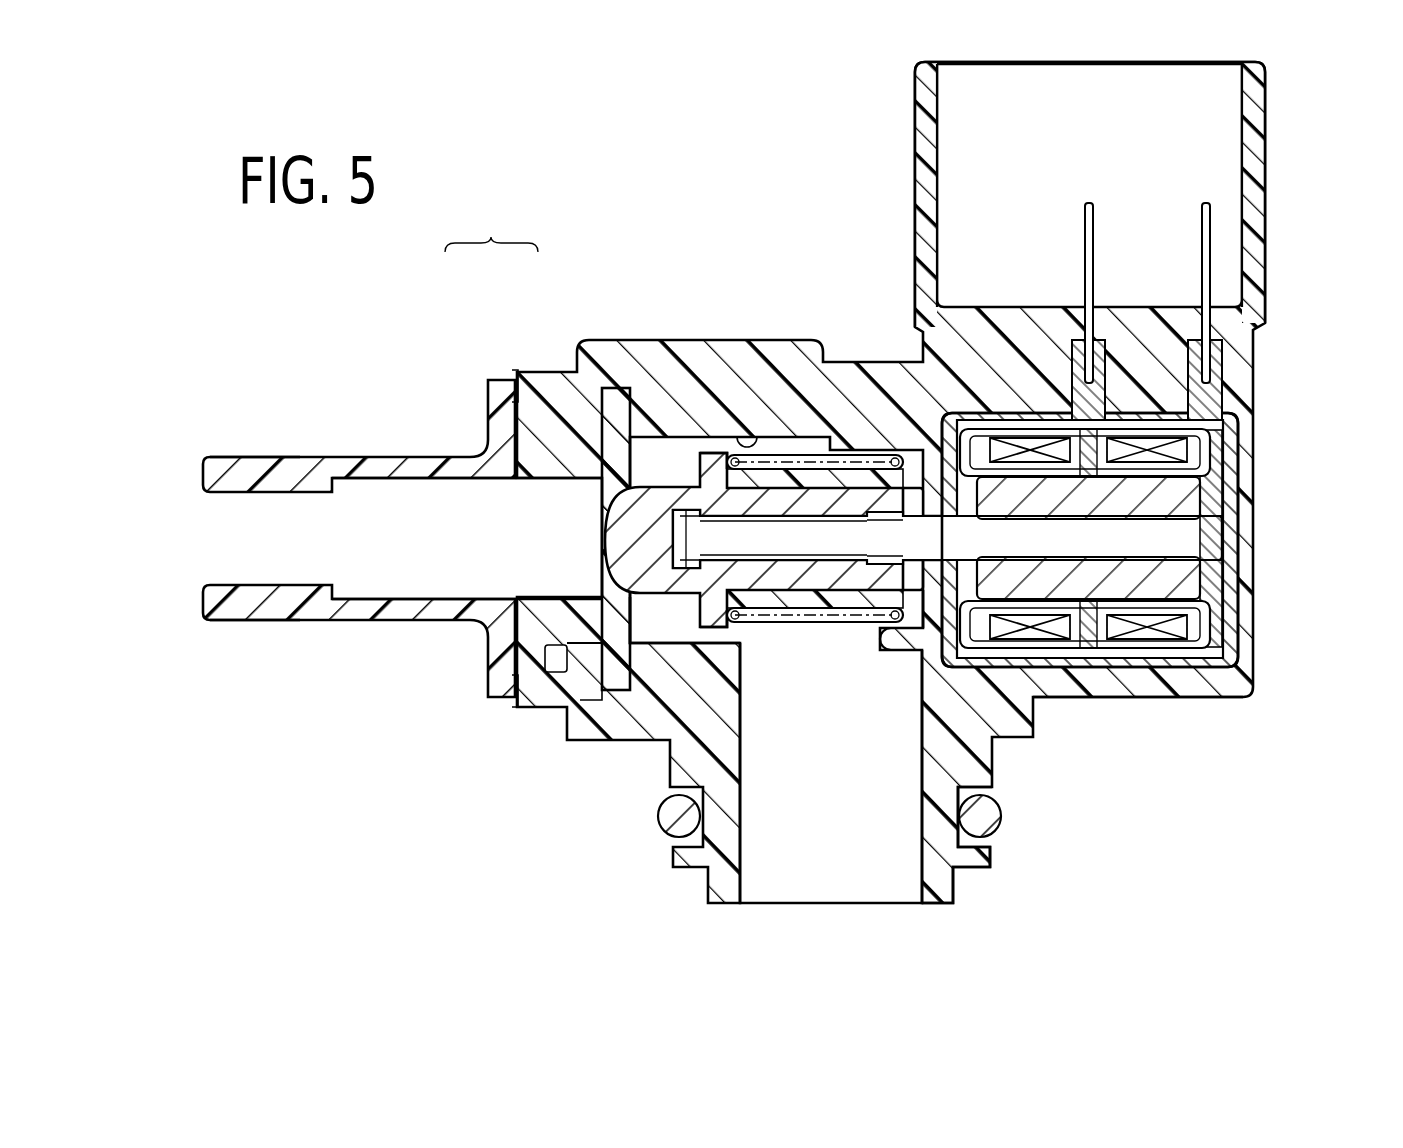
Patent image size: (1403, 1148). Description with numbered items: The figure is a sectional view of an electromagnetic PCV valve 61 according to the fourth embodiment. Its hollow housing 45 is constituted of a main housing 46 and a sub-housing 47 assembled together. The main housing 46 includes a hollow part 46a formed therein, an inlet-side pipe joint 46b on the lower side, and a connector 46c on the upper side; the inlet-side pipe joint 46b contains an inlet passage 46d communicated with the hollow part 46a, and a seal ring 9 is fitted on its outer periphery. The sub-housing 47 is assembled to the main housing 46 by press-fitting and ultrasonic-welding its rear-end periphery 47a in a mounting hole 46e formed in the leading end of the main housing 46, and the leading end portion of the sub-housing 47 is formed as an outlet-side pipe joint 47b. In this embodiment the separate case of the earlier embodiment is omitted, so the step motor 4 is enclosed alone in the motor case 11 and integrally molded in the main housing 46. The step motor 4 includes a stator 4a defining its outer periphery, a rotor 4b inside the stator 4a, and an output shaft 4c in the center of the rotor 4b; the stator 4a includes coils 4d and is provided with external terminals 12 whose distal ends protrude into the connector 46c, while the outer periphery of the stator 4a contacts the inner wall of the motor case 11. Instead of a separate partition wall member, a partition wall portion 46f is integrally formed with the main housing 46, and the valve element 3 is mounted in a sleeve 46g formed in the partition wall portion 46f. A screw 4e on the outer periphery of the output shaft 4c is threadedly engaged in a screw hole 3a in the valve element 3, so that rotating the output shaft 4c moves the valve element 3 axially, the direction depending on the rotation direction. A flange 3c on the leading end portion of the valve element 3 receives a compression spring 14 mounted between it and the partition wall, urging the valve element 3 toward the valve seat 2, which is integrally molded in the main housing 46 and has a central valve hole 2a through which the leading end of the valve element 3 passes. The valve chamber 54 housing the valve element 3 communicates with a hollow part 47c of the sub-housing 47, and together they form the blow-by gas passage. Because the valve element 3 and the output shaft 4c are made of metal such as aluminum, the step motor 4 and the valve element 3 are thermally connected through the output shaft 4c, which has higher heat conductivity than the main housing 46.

The electromagnetic PCV valve 61 is at (772, 187).
The housing 45 is at (478, 226).
The main housing 46 is at (590, 340).
The hollow part 46a is at (745, 438).
The inlet-side pipe joint 46b is at (960, 885).
The connector 46c is at (1266, 140).
The inlet passage 46d is at (742, 880).
The mounting hole 46e is at (571, 645).
The partition wall portion 46f is at (915, 636).
The sleeve 46g is at (866, 600).
The sub-housing 47 is at (452, 410).
The rear-end periphery 47a is at (517, 710).
The outlet-side pipe joint 47b is at (265, 620).
The hollow part 47c is at (380, 600).
The valve seat 2 is at (615, 678).
The valve hole 2a is at (598, 650).
The valve element 3 is at (672, 470).
The screw hole 3a is at (740, 560).
The flange 3c is at (714, 452).
The compression spring 14 is at (858, 453).
The step motor 4 is at (1233, 598).
The stator 4a is at (1190, 660).
The rotor 4b is at (1208, 500).
The output shaft 4c is at (1213, 547).
The coils 4d is at (1180, 452).
The screw 4e is at (797, 560).
The external terminals 12 is at (1201, 243).
The seal ring 9 is at (999, 823).
The motor case 11 is at (1133, 694).
The valve chamber 54 is at (660, 628).